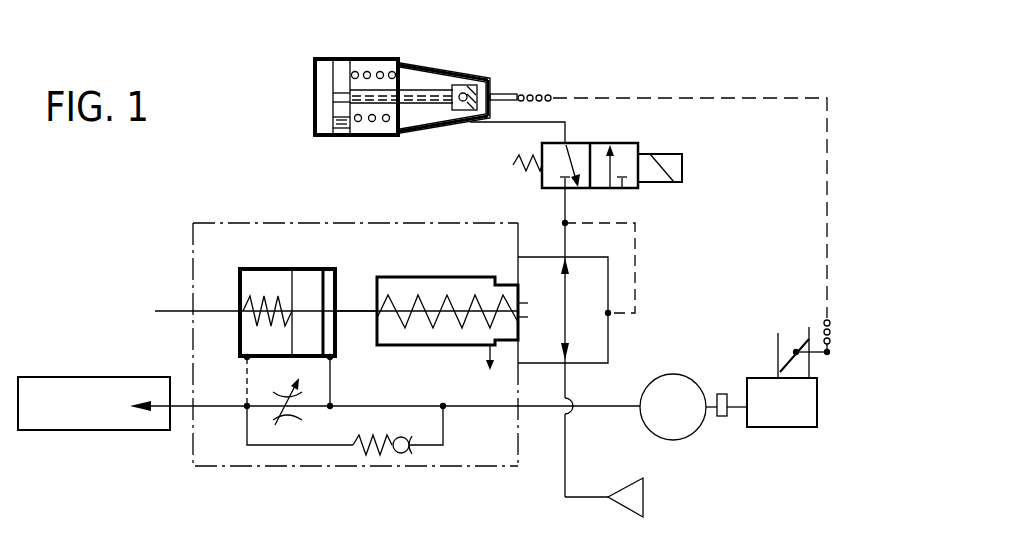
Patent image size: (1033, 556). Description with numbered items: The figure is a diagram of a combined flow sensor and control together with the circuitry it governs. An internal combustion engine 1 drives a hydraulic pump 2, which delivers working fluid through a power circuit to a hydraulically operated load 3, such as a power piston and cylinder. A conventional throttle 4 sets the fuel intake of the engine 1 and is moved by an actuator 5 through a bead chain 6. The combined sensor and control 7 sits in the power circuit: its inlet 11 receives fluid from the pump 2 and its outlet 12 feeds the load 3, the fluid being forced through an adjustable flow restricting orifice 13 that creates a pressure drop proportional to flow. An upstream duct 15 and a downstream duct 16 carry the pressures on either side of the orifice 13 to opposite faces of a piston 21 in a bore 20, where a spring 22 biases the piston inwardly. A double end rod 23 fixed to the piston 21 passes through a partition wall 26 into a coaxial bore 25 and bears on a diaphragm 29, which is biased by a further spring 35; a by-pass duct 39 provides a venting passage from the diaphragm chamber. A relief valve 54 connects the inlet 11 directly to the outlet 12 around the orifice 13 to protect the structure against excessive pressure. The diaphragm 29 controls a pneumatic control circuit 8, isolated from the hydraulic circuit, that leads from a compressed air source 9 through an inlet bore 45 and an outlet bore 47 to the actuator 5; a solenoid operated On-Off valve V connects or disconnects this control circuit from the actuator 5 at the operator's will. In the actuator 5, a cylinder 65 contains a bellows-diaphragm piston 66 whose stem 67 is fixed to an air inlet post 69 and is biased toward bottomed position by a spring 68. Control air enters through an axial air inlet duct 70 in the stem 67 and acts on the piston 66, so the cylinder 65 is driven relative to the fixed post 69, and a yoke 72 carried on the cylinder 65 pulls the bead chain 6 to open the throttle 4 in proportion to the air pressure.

The internal combustion engine 1 is at (785, 418).
The hydraulic pump 2 is at (683, 424).
The load 3 is at (72, 378).
The throttle 4 is at (800, 346).
The actuator 5 is at (402, 91).
The bead chain 6 is at (619, 98).
The combined sensor and control 7 is at (184, 248).
The control circuit 8 is at (570, 468).
The source 9 is at (631, 508).
The inlet 11 is at (378, 385).
The outlet 12 is at (232, 384).
The flow restricting orifice 13 is at (284, 420).
The upstream duct 15 is at (332, 374).
The downstream duct 16 is at (250, 376).
The bore 20 is at (273, 278).
The piston 21 is at (313, 275).
The spring 22 is at (260, 326).
The double end stem or rod 23 is at (346, 314).
The bore 25 is at (400, 282).
The partition wall 26 is at (352, 292).
The diaphragm 29 is at (520, 292).
The spring 35 is at (435, 326).
The by-pass duct 39 is at (528, 312).
The inlet bore 45 is at (567, 364).
The outlet bore 47 is at (609, 314).
The relief valve 54 is at (404, 454).
The cylinder 65 is at (356, 136).
The piston 66 is at (343, 65).
The stem or rod 67 is at (415, 86).
The spring 68 is at (368, 72).
The air inlet post 69 is at (470, 90).
The air inlet duct 70 is at (381, 100).
The yoke 72 is at (424, 128).
The solenoid operated On-Off valve V is at (603, 143).